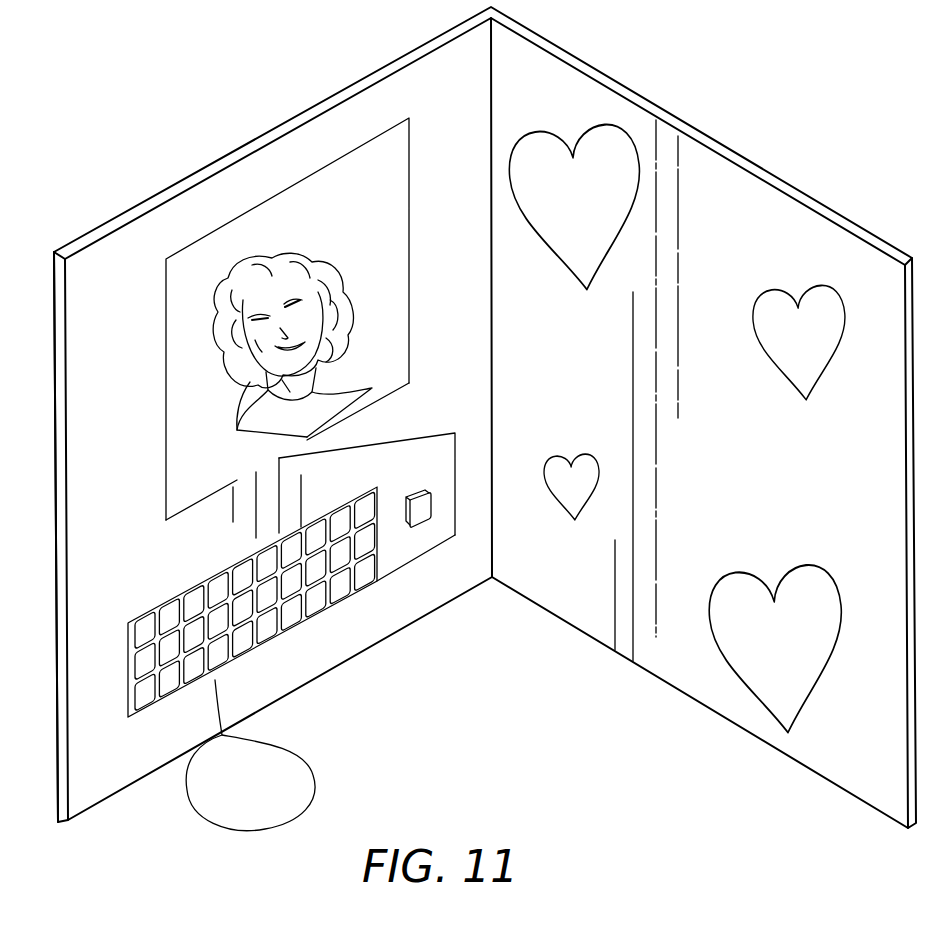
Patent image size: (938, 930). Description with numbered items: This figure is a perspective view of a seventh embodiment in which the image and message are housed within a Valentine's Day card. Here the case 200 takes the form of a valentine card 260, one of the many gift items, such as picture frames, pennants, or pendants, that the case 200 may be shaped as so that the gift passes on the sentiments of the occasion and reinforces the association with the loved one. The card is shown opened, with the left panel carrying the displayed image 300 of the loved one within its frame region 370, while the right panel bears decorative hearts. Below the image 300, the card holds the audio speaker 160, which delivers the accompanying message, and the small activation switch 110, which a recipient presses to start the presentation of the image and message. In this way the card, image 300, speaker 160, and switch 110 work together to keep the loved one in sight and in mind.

The case 200 is at (588, 64).
The valentine card 260 is at (679, 391).
The display screen frame 370 is at (210, 233).
The image 300 is at (257, 256).
The audio speaker 160 is at (307, 620).
The activation switch 110 is at (414, 528).